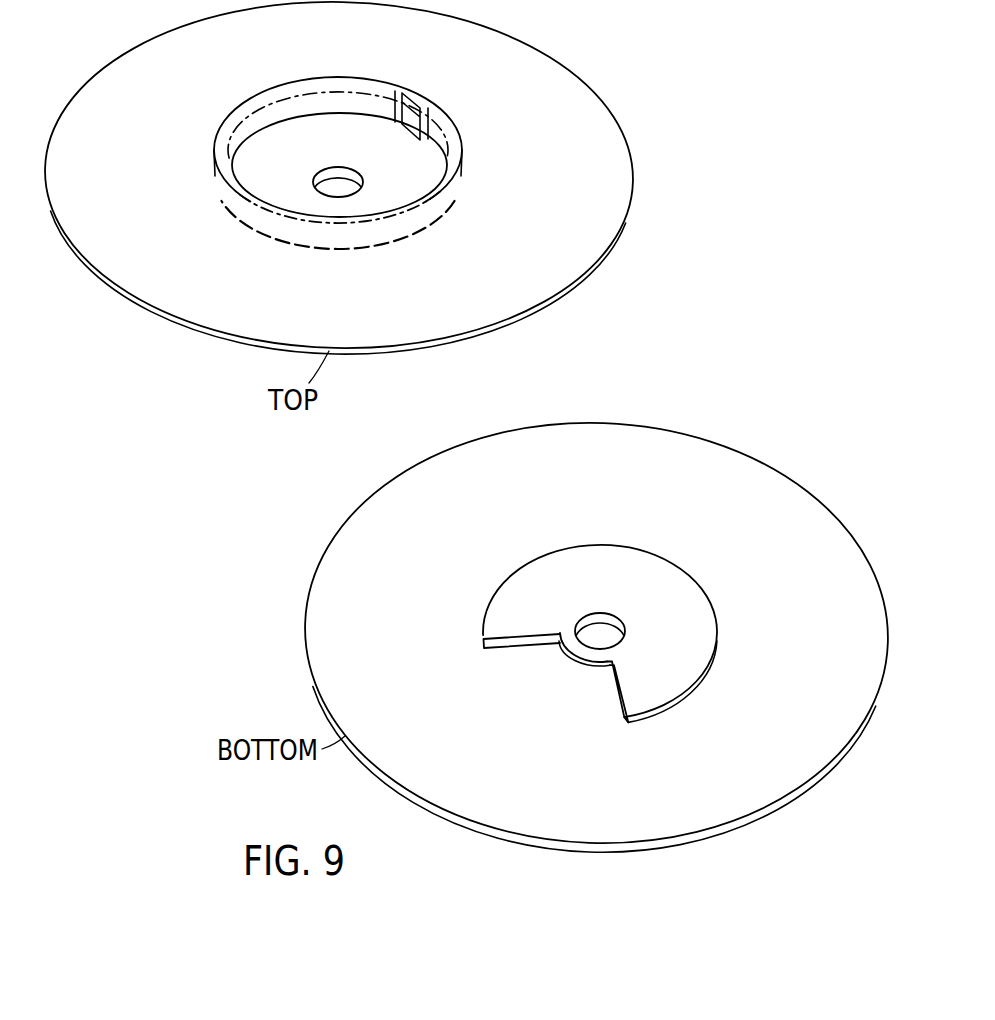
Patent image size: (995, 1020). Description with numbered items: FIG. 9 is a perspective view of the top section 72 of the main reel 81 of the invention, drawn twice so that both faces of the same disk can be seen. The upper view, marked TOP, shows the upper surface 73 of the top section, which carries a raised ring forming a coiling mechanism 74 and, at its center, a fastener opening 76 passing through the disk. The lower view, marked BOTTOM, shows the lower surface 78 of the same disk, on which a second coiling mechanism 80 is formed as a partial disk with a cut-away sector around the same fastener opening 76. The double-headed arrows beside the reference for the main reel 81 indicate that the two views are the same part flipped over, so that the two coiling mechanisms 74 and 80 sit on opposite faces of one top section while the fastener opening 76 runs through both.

The disk 72 is at (62, 105).
The upper surface 73 is at (283, 297).
The coiling mechanism 74 is at (216, 146).
The fastener opening 76 is at (336, 180).
The lower surface 78 is at (462, 733).
The coiling mechanism 80 is at (502, 582).
The main reel 81 is at (744, 291).